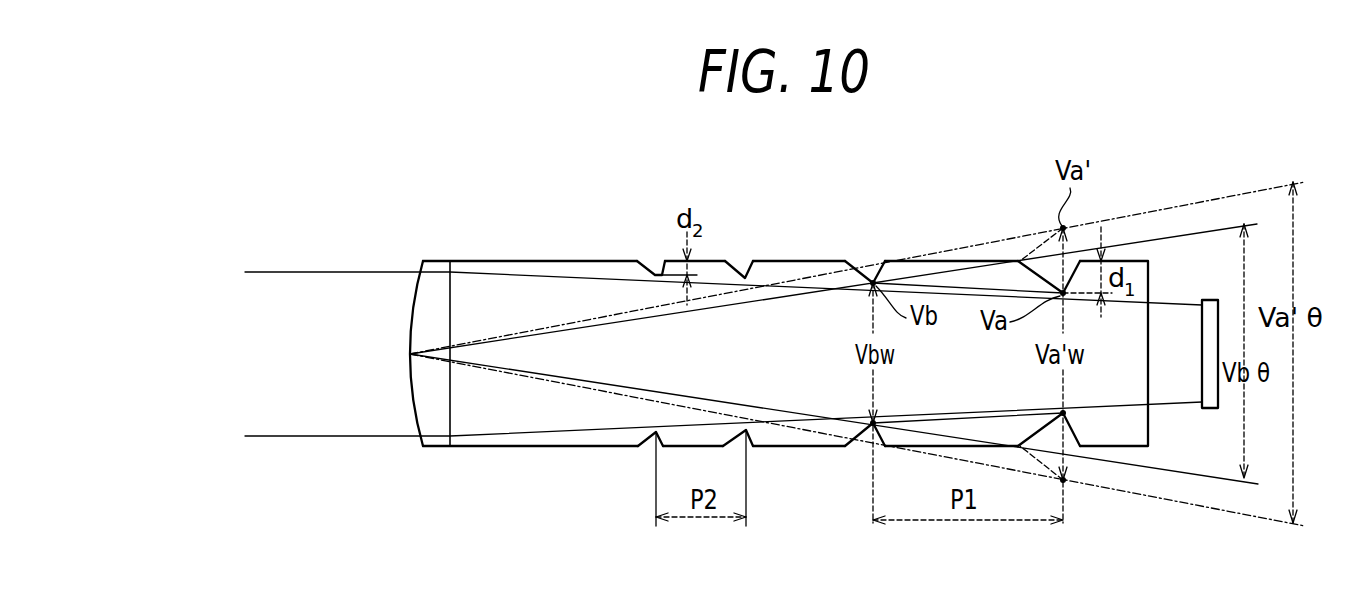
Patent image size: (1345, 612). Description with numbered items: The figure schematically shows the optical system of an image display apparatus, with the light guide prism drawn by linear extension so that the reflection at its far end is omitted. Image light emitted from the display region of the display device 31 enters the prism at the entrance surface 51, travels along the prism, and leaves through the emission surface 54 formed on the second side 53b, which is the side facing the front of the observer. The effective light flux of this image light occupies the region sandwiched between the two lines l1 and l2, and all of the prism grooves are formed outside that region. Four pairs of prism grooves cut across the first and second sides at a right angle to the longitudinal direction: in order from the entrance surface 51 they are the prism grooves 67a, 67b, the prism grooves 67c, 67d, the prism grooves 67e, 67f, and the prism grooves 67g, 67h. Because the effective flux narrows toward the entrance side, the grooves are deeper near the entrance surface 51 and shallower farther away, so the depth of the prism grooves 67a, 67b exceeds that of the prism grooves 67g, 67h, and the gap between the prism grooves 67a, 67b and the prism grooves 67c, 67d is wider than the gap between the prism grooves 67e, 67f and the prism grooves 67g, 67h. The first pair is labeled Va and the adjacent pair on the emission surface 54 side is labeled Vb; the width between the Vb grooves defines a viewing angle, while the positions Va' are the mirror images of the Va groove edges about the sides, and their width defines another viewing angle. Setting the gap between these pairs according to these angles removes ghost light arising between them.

The entrance surface 51 is at (1148, 420).
The second side 53b is at (562, 448).
The emission surface 54 is at (410, 330).
The display device 31 is at (1210, 298).
The prism groove 67a is at (1050, 275).
The prism groove 67b is at (1045, 440).
The prism groove 67c is at (866, 276).
The prism groove 67d is at (862, 430).
The prism groove 67e is at (738, 270).
The prism groove 67f is at (750, 436).
The prism groove 67g is at (650, 264).
The prism groove 67h is at (648, 440).
The line l1 is at (512, 275).
The line l2 is at (506, 438).